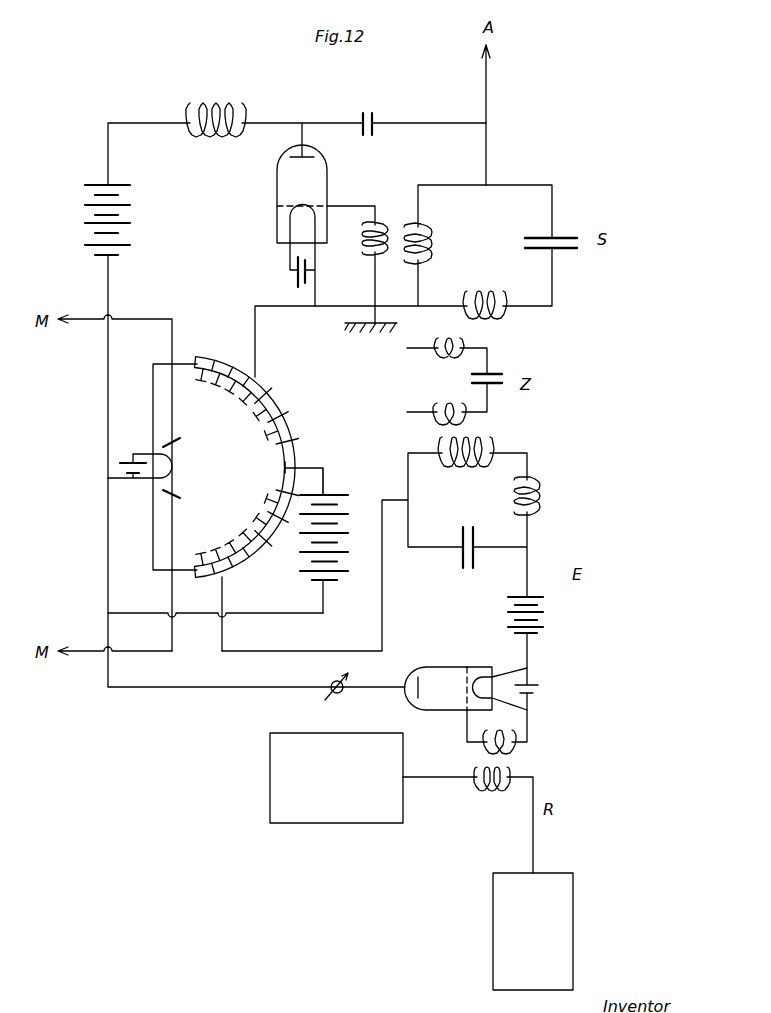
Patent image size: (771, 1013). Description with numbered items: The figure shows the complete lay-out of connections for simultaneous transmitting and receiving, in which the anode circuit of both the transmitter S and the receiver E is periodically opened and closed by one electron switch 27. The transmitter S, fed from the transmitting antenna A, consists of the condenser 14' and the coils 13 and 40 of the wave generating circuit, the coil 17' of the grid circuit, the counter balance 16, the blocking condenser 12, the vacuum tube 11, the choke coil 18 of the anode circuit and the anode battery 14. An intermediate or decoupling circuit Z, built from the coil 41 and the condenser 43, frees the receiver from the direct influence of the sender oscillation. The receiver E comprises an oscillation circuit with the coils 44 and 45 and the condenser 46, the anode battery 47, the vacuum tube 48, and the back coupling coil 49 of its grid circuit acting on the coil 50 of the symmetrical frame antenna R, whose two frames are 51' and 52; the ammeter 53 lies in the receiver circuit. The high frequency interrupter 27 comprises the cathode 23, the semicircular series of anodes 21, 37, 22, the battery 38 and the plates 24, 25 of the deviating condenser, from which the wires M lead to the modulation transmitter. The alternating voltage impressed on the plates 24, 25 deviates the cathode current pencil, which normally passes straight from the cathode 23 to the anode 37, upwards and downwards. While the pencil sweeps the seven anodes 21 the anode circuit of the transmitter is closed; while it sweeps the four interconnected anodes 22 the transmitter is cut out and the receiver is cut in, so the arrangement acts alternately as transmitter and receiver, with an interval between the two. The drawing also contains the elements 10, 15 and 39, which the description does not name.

The grid condenser 10 is at (295, 255).
The vacuum tube 11 is at (302, 194).
The blocking condenser 12 is at (414, 262).
The coil of the wave generating circuit 13 is at (433, 243).
The anode battery 14 is at (83, 220).
The condenser 14' is at (548, 256).
The antenna 15 is at (501, 115).
The counter balance 16 is at (371, 339).
The coil of the grid circuit 17' is at (365, 249).
The choke coil 18 is at (216, 110).
The anodes 21 is at (247, 467).
The anodes 22 is at (237, 614).
The cathode 23 is at (172, 466).
The plate of the deviating condenser 24 is at (184, 439).
The plate of the deviating condenser 25 is at (183, 490).
The electron switch 27 is at (237, 467).
The anode 37 is at (314, 471).
The battery 38 is at (336, 554).
The battery 39 is at (128, 455).
The coil of the wave generating circuit 40 is at (495, 303).
The coil of the intermediate circuit 41 is at (458, 342).
The condenser of the intermediate circuit 43 is at (491, 394).
The coil of the receiver oscillation circuit 44 is at (465, 465).
The coil of the receiver oscillation circuit 45 is at (543, 495).
The condenser of the receiver oscillation circuit 46 is at (484, 546).
The anode battery 47 is at (541, 615).
The vacuum tube 48 is at (466, 688).
The back coupling coil 49 is at (518, 748).
The coil of the symmetrical frame antenna 50 is at (490, 793).
The frame of the antenna 51' is at (336, 778).
The frame of the antenna 52 is at (533, 931).
The ammeter 53 is at (350, 692).